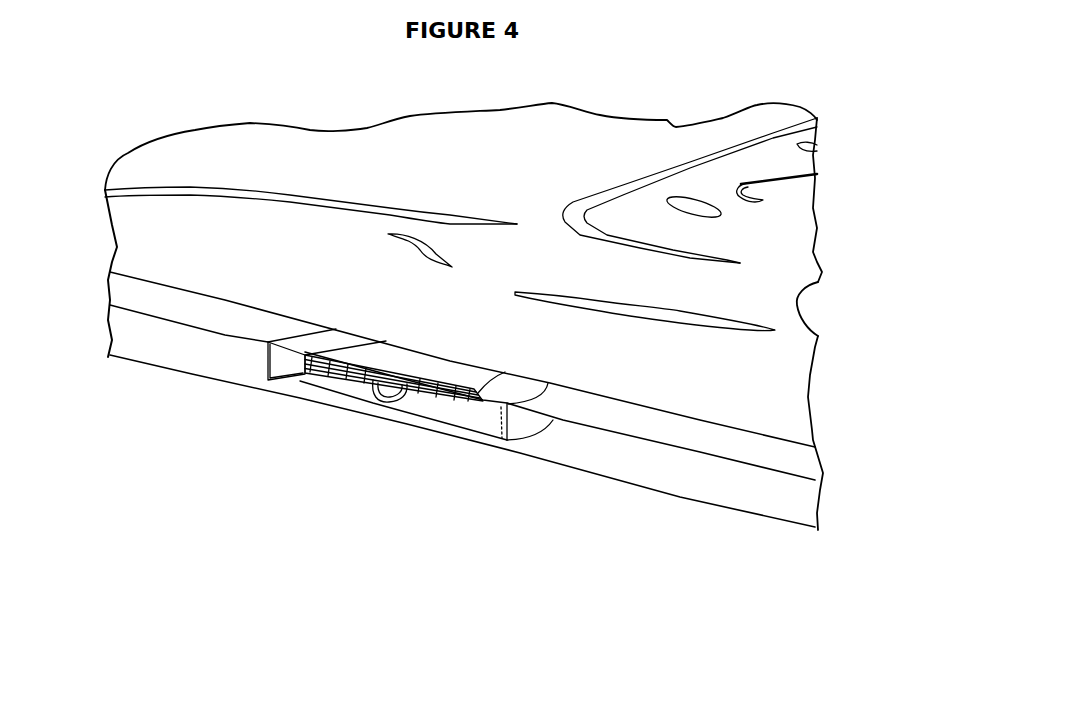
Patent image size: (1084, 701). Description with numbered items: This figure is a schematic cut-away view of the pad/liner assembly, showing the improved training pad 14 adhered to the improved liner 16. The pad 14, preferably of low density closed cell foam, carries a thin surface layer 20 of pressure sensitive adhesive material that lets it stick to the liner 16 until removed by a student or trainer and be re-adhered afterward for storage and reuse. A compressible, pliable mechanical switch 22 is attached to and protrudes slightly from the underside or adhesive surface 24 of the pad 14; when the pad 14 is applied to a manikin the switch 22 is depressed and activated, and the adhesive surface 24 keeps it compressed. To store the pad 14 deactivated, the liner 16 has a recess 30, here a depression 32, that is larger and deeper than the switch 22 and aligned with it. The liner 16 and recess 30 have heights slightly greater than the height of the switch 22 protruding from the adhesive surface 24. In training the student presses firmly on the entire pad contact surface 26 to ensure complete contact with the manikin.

The training pad 14 is at (775, 93).
The liner 16 is at (755, 515).
The thin surface layer of adhesive material 20 is at (500, 457).
The switch 22 is at (375, 432).
The adhesive surface 24 is at (292, 352).
The pad contact surface 26 is at (775, 412).
The recess 30 is at (462, 428).
The depression 32 is at (302, 380).